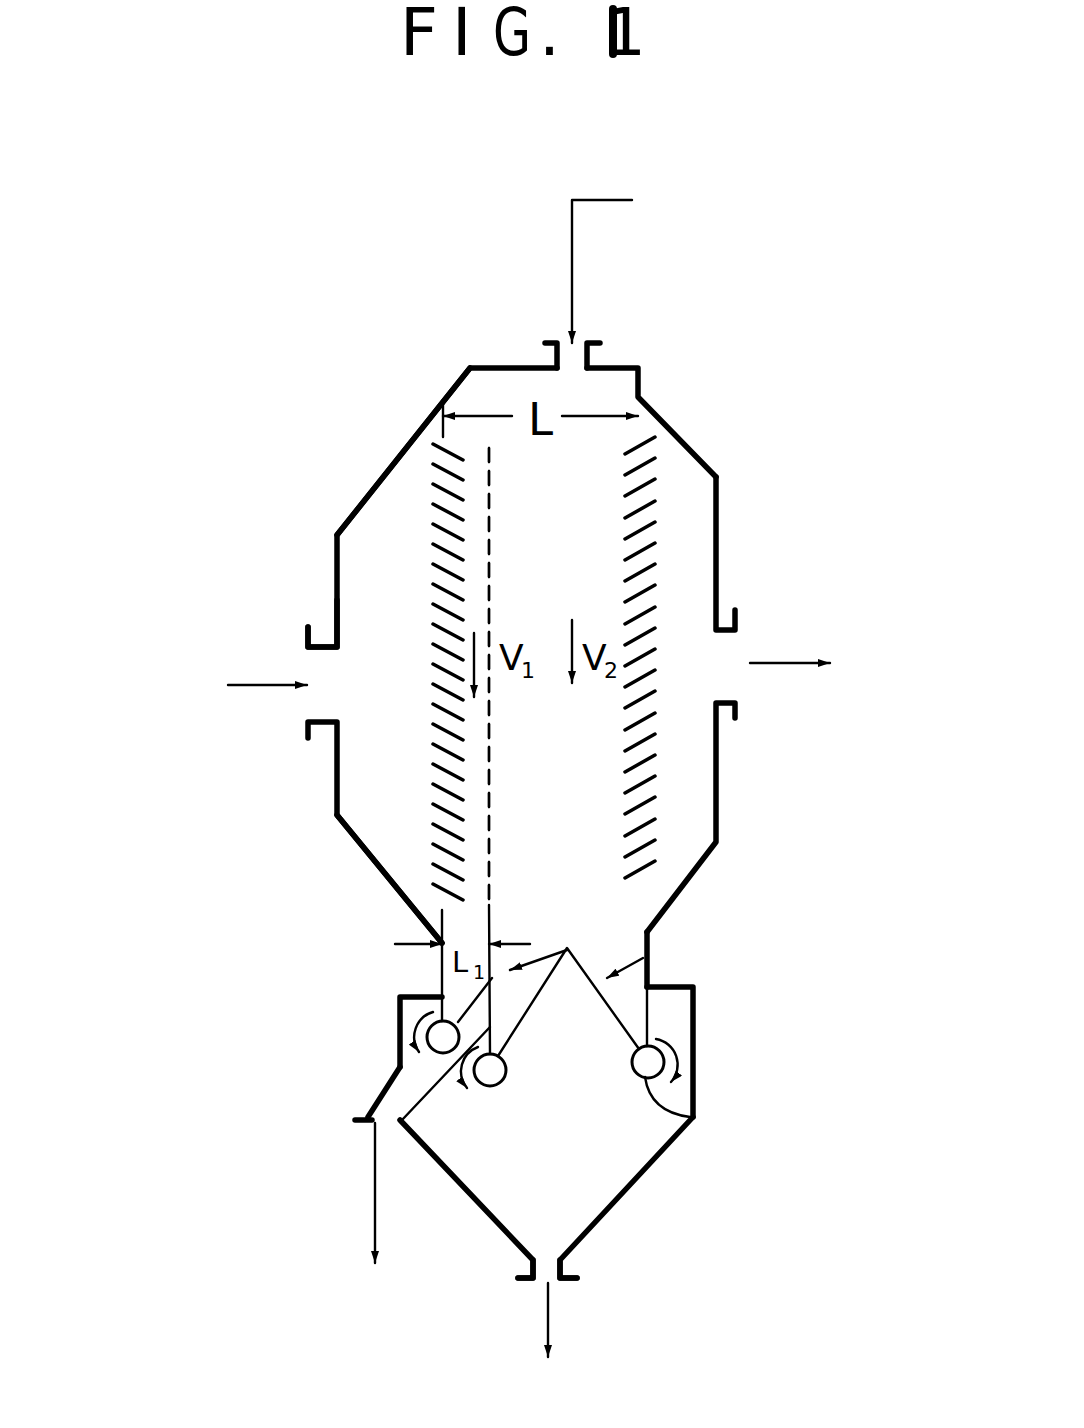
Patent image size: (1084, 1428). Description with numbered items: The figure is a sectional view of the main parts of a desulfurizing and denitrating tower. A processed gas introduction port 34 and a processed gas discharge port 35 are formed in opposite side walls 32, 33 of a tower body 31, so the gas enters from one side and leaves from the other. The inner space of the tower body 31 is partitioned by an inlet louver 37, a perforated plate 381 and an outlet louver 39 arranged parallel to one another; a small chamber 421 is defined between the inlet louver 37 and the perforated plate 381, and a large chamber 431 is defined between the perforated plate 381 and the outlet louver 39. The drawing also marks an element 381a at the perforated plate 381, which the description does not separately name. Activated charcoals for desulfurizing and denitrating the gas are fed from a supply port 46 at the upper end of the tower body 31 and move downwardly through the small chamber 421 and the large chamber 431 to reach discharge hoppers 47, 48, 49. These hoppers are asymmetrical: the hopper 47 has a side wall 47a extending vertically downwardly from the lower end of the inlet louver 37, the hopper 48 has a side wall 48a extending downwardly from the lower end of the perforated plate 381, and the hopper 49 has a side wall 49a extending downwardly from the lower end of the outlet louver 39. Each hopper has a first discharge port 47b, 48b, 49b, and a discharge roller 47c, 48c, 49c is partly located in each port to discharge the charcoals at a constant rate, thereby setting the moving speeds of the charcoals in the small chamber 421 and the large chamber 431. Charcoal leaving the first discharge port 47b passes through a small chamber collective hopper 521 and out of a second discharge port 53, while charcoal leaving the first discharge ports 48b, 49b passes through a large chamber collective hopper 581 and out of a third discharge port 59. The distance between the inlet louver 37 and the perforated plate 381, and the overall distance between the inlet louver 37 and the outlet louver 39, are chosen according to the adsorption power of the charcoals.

The tower body 31 is at (718, 517).
The side wall 32 is at (440, 535).
The side wall 33 is at (717, 590).
The processed gas introduction port 34 is at (323, 640).
The processed gas discharge port 35 is at (733, 710).
The inlet louver 37 is at (356, 512).
The outlet louver 39 is at (650, 462).
The perforated plate 381 is at (483, 485).
The center line 381a is at (489, 512).
The supply port 46 is at (578, 348).
The small chamber 421 is at (467, 758).
The large chamber 431 is at (517, 817).
The discharge hopper 47 is at (442, 972).
The side wall 47a is at (470, 977).
The first discharge port 47b is at (450, 1008).
The discharge roller 47c is at (456, 1024).
The discharge hopper 48 is at (650, 928).
The side wall 48a is at (492, 923).
The first discharge port 48b is at (506, 1065).
The discharge roller 48c is at (507, 1083).
The discharge hopper 49 is at (647, 958).
The side wall 49a is at (648, 1012).
The first discharge port 49b is at (664, 1052).
The discharge roller 49c is at (693, 1117).
The small chamber collective hopper 521 is at (400, 1068).
The second discharge port 53 is at (363, 1114).
The large chamber collective hopper 581 is at (607, 1217).
The third discharge port 59 is at (562, 1268).